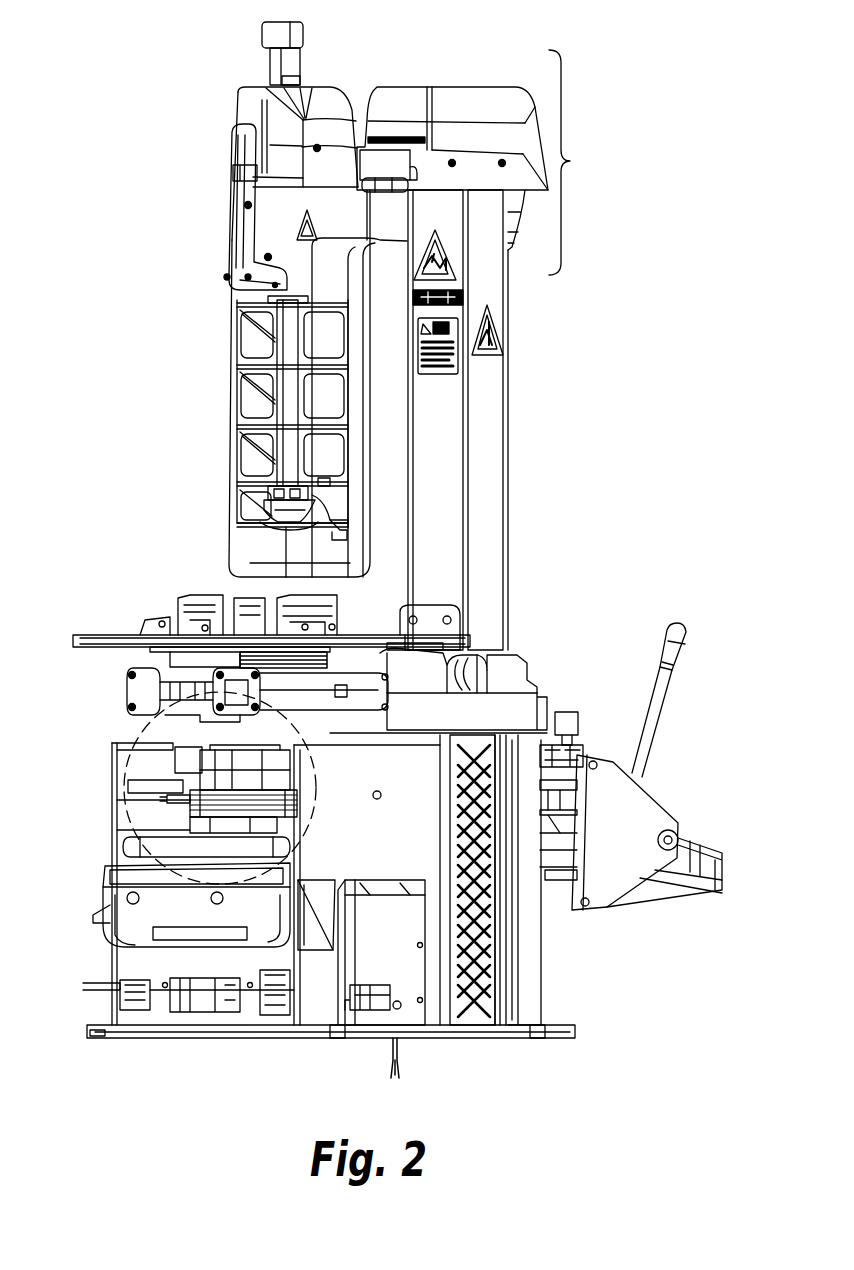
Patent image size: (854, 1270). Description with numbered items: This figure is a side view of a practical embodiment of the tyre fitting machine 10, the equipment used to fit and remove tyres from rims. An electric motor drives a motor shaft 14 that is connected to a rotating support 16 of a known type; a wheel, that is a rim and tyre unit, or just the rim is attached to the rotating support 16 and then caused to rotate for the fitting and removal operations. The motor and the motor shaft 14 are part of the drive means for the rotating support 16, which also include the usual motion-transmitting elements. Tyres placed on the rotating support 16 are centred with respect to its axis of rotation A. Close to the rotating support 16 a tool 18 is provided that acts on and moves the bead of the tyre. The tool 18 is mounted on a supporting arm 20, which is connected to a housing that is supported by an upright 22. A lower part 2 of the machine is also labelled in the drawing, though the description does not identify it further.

The tyre fitting machine 10 is at (425, 148).
The supporting arm 20 is at (282, 350).
The tool 18 is at (252, 513).
The upright 22 is at (487, 433).
The rotating support 16 is at (389, 634).
The motor shaft 14 is at (262, 782).
The lower frame housing 2 is at (163, 767).
The axis of rotation A is at (195, 692).